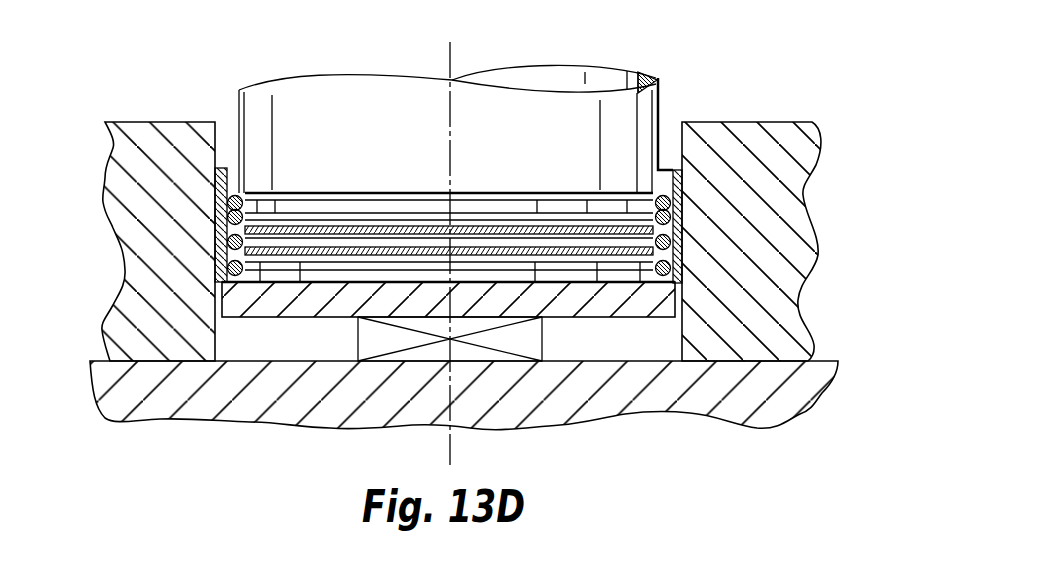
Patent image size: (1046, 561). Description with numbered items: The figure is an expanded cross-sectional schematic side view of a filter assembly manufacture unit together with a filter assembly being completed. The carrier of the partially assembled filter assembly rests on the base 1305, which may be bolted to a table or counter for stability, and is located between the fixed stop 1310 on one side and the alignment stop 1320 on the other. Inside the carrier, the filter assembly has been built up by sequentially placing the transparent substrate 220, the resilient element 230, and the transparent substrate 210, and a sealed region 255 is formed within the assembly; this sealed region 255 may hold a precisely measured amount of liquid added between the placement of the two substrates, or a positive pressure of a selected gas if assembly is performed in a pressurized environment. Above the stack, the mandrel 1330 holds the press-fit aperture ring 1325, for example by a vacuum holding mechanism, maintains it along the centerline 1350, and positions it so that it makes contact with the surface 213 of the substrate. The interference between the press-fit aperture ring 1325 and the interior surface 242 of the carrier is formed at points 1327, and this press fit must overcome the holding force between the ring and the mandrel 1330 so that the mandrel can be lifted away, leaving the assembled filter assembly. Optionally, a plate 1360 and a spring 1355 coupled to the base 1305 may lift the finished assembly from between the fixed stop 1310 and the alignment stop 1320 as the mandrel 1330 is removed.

The fixed stop 1310 is at (114, 130).
The alignment stop 1320 is at (802, 132).
The base 1305 is at (768, 422).
The spring 1355 is at (417, 357).
The plate 1360 is at (627, 318).
The centerline 1350 is at (452, 60).
The press-fit aperture ring 1325 is at (298, 195).
The mandrel 1330 is at (658, 80).
The interior surface of carrier 242 is at (232, 168).
The third surface 213 is at (350, 220).
The sealed region 255 is at (557, 243).
The transparent substrate 210 is at (665, 230).
The transparent substrate 220 is at (665, 255).
The points 1327 is at (225, 203).
The resilient element 230 is at (225, 268).